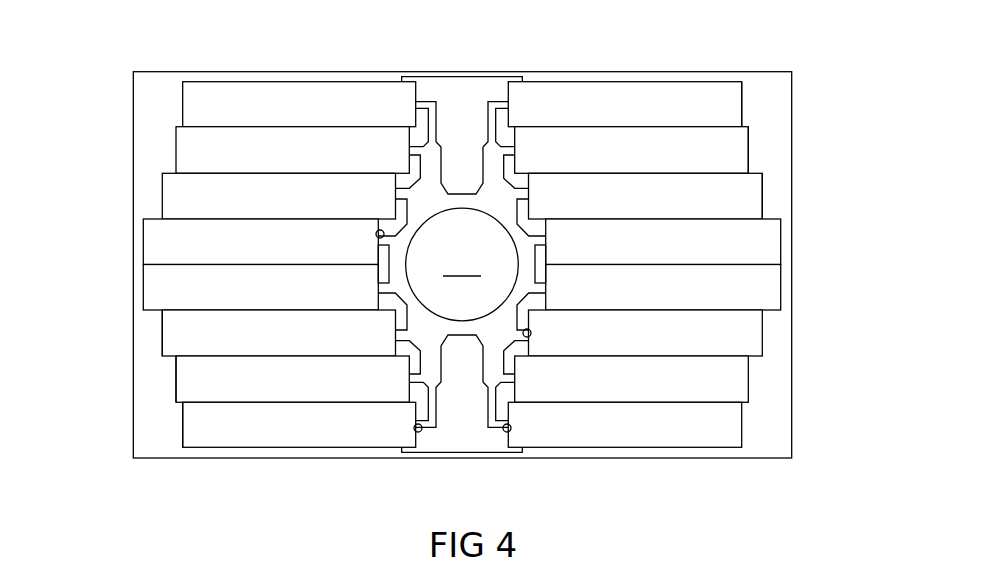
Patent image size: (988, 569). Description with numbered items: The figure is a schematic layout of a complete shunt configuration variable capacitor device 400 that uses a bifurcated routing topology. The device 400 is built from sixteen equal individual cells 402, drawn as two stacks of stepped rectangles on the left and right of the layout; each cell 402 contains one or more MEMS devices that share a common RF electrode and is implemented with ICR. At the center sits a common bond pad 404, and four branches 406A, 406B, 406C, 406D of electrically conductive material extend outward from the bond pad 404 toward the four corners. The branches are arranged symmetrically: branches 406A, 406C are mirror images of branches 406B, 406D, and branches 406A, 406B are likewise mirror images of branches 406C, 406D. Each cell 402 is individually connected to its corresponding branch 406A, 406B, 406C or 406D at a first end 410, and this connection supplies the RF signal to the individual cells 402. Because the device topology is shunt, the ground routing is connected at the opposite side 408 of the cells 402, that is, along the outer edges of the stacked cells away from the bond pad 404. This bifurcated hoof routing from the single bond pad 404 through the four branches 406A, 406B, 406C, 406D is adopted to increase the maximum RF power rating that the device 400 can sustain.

The shunt configuration variable capacitor device 400 is at (106, 126).
The cell 402 is at (363, 163).
The bond pad 404 is at (462, 264).
The branch 406A is at (432, 167).
The branch 406B is at (490, 157).
The branch 406C is at (437, 410).
The branch 406D is at (487, 410).
The opposite side 408 is at (762, 192).
The first end 410 is at (377, 234).